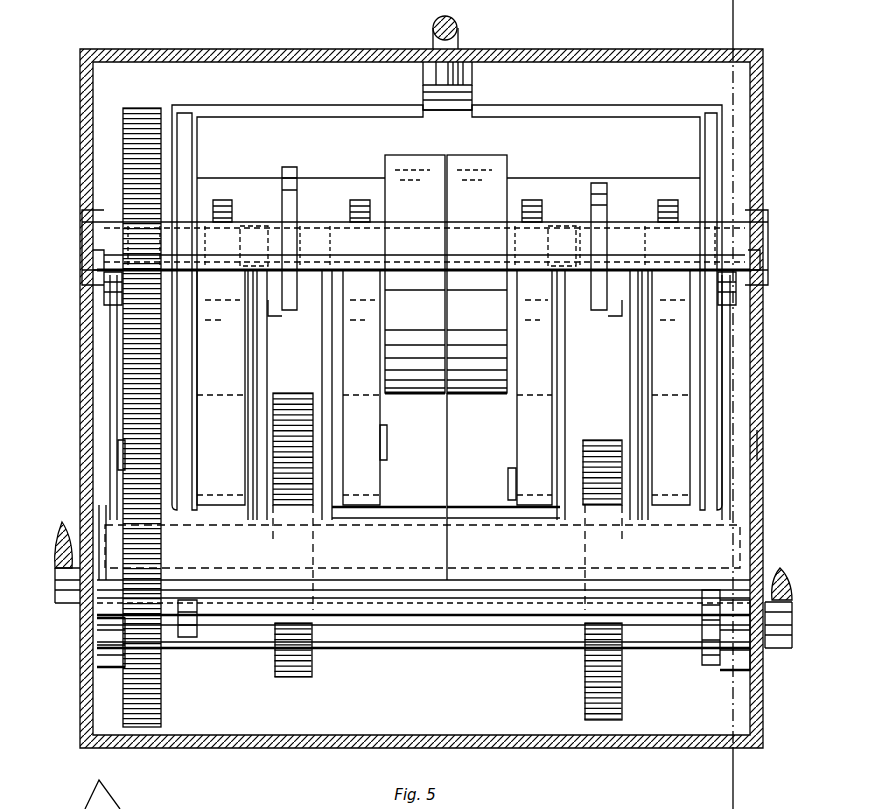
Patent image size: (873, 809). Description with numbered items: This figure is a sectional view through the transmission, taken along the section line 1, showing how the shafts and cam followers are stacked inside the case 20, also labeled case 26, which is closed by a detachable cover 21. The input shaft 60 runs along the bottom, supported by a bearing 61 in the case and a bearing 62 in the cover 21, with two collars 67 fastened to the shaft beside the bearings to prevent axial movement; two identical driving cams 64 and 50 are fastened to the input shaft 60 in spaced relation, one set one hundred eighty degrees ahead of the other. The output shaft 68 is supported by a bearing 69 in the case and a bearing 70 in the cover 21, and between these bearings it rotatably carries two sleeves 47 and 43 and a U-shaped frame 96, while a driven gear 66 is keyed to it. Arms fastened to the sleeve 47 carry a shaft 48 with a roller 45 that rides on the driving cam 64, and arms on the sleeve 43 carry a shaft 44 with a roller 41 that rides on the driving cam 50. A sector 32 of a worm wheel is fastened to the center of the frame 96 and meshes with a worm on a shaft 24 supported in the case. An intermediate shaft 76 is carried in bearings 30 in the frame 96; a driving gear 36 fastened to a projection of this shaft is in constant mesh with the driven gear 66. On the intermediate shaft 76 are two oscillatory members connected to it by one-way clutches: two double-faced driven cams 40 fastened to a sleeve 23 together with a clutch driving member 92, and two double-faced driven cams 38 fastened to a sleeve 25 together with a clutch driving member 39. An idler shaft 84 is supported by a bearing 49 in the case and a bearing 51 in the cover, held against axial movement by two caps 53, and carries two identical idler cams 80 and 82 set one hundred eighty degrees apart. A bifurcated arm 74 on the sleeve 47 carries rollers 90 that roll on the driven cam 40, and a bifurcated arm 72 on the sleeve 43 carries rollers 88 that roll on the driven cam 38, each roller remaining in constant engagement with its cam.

The section line 1 is at (746, 22).
The case 20 is at (423, 76).
The detachable cover 21 is at (752, 445).
The sleeve 23 is at (620, 324).
The shaft 24 is at (458, 24).
The sleeve 25 is at (278, 318).
The case 26 is at (606, 49).
The bearings 30 is at (142, 354).
The sector of a worm wheel 32 is at (472, 96).
The driving gear 36 is at (140, 122).
The double-faced driven cams 38 is at (356, 351).
The driving member of one-way drive clutch 39 is at (418, 394).
The double-faced driven cams 40 is at (666, 361).
The roller 41 is at (300, 396).
The sleeve 43 is at (415, 515).
The shaft 44 is at (388, 452).
The roller 45 is at (600, 446).
The sleeve 47 is at (470, 515).
The shaft 48 is at (510, 482).
The bearing 49 is at (98, 224).
The driving cam 50 is at (272, 670).
The bearing 51 is at (756, 228).
The caps 53 is at (104, 255).
The input shaft 60 is at (453, 640).
The bearing 61 is at (100, 658).
The bearing 62 is at (738, 668).
The driving cam 64 is at (590, 673).
The driven gear 66 is at (130, 452).
The collars 67 is at (125, 668).
The output shaft 68 is at (68, 540).
The bearing 69 is at (103, 520).
The bearing 70 is at (742, 522).
The bifurcated arm 72 is at (262, 365).
The bifurcated arm 74 is at (640, 396).
The intermediate shaft 76 is at (110, 296).
The idler cam 80 is at (600, 190).
The idler cam 82 is at (290, 172).
The idler shaft 84 is at (256, 226).
The rollers 88 is at (222, 204).
The rollers 90 is at (533, 204).
The driving member of one-way drive clutch 92 is at (473, 394).
The U-shaped frame 96 is at (312, 105).